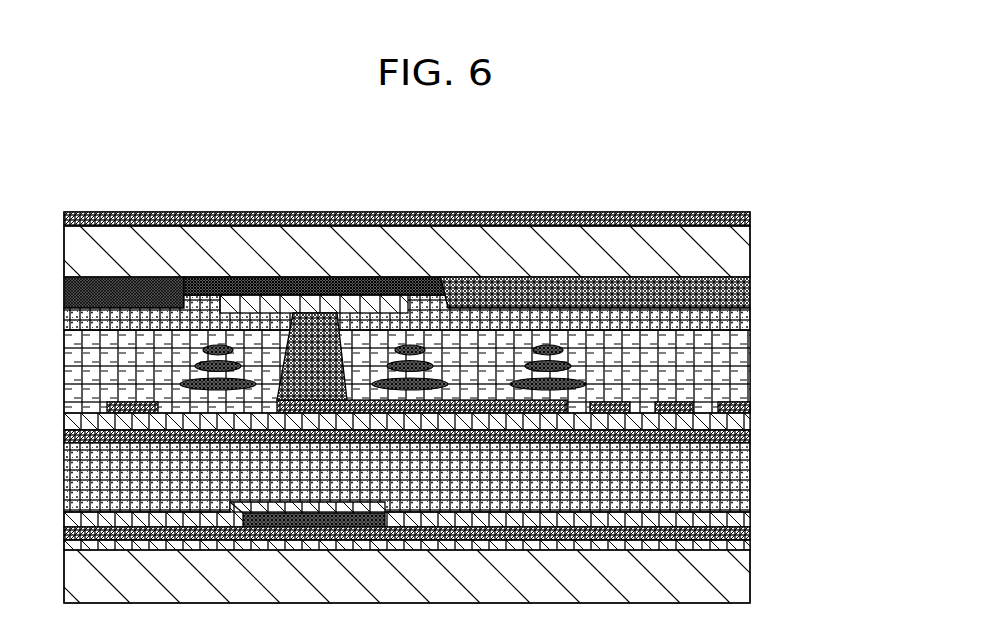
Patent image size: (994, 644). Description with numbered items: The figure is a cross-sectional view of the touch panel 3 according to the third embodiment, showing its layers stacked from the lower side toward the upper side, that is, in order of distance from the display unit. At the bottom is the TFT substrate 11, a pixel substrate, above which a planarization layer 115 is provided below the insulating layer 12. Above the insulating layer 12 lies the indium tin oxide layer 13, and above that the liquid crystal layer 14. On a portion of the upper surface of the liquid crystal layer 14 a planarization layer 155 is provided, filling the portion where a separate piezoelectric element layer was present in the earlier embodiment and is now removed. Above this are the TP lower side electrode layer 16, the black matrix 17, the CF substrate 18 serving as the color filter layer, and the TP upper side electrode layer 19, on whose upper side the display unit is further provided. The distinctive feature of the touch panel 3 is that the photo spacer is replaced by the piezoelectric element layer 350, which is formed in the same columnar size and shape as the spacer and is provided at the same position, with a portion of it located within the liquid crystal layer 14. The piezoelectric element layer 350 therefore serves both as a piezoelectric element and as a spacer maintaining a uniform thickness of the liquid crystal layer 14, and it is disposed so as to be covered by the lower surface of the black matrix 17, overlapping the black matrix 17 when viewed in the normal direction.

The touch panel 3 is at (671, 141).
The TFT substrate 11 is at (745, 578).
The insulating layer 12 is at (745, 421).
The ITO layer 13 is at (745, 409).
The liquid crystal layer 14 is at (745, 365).
The TP lower side electrode layer 16 is at (370, 305).
The black matrix 17 is at (420, 283).
The CF substrate 18 is at (745, 250).
The TP upper side electrode layer 19 is at (751, 220).
The planarization layer 115 is at (745, 480).
The planarization layer 155 is at (745, 318).
The piezoelectric element layer 350 is at (315, 367).